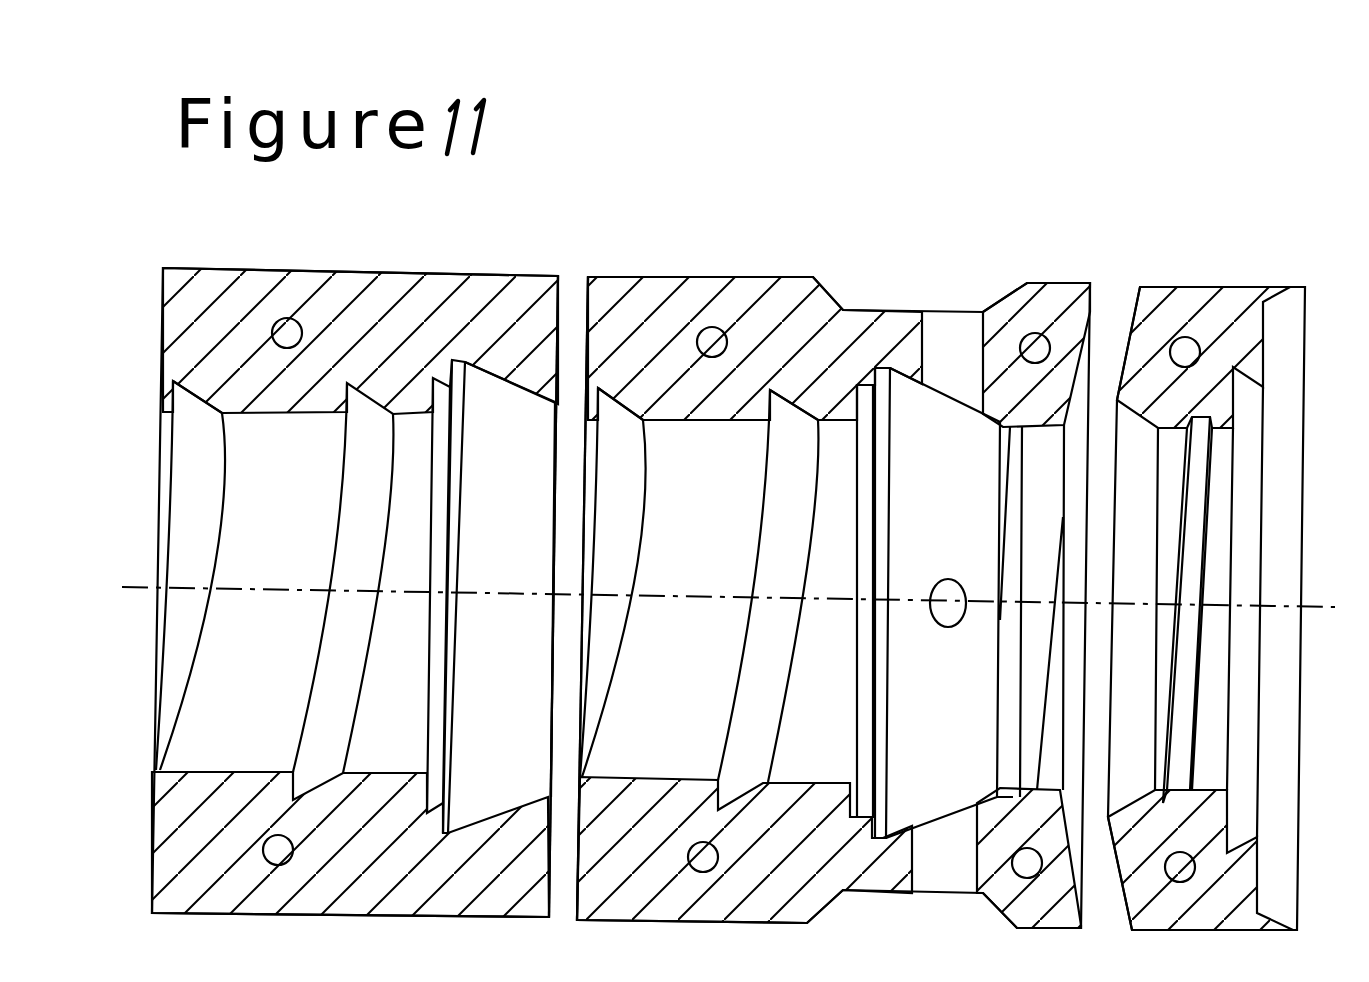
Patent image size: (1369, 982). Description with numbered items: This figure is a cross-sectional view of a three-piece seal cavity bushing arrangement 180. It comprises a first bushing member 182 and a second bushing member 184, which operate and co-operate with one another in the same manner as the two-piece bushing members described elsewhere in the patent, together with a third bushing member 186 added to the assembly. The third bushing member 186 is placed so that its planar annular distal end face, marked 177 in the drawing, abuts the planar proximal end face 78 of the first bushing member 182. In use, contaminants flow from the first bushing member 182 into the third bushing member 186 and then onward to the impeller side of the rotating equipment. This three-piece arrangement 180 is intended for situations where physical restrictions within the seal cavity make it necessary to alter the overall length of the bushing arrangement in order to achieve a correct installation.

The planar proximal end face 78 is at (587, 330).
The joint between housing sections 177 is at (576, 330).
The three-piece arrangement 180 is at (874, 505).
The first bushing member 182 is at (833, 583).
The second bushing member 184 is at (1206, 580).
The third bushing member 186 is at (355, 573).